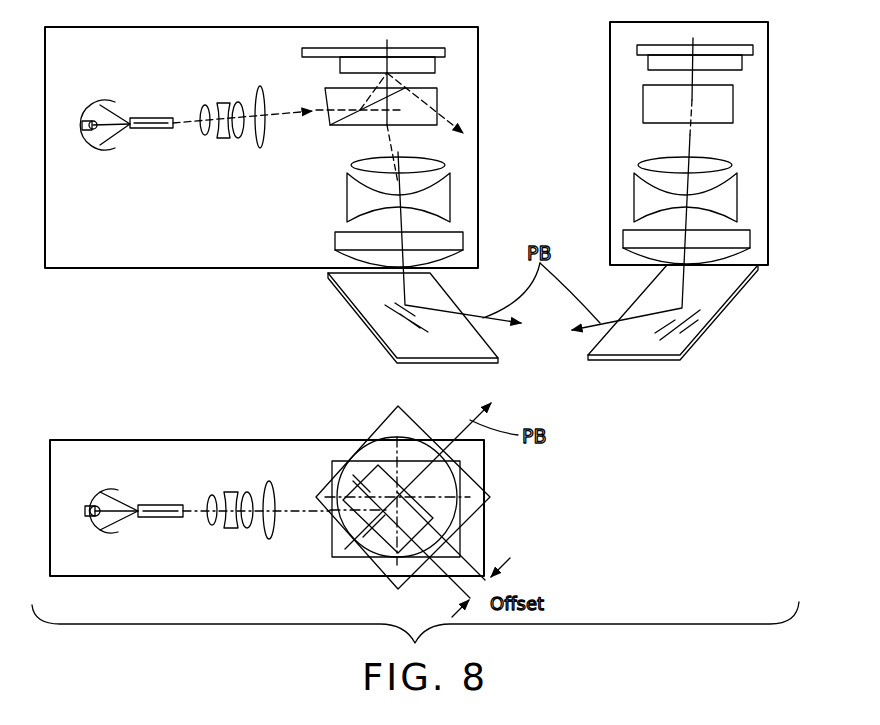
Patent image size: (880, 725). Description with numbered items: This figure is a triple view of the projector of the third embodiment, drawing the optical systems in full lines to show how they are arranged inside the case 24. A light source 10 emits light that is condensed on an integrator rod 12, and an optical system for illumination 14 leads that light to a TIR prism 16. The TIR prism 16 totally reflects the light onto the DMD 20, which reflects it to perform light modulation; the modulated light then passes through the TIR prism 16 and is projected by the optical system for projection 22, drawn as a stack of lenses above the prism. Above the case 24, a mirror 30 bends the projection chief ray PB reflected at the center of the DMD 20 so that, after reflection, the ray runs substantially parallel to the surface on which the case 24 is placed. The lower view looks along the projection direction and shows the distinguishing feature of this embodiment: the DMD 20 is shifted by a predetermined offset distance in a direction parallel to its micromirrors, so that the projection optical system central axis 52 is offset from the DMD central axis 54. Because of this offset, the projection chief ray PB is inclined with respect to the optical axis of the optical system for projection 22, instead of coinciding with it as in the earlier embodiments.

The light source 10 is at (110, 147).
The integrator rod 12 is at (165, 130).
The optical system for illumination 14 is at (270, 149).
The TIR prism 16 is at (438, 98).
The DMD 20 is at (438, 60).
The optical system for projection 22 is at (322, 162).
The case 24 is at (150, 270).
The mirror 30 is at (350, 310).
The projection optical system central axis 52 is at (394, 490).
The DMD central axis 54 is at (388, 514).